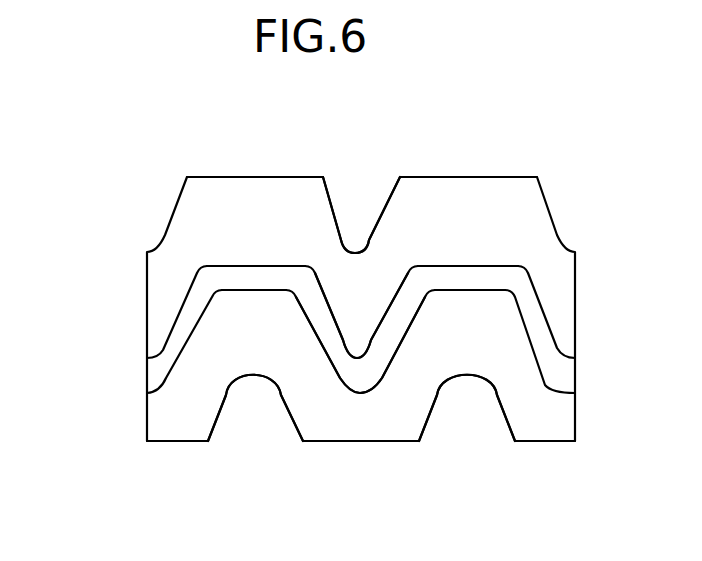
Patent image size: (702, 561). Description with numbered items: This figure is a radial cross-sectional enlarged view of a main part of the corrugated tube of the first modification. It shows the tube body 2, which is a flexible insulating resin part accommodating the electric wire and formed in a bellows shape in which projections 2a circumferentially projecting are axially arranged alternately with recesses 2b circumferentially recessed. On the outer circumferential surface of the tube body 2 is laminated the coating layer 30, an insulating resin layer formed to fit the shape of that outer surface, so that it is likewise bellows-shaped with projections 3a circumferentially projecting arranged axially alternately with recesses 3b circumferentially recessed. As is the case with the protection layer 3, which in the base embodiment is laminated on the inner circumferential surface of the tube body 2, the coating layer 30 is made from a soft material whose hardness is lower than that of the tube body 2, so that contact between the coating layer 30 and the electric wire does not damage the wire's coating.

The coating layer 30 is at (147, 303).
The tube body 2 is at (147, 371).
The projections 2a is at (255, 265).
The recesses 2b is at (345, 337).
The protection layer 3 is at (147, 414).
The projections 3a is at (190, 177).
The recesses 3b is at (367, 250).